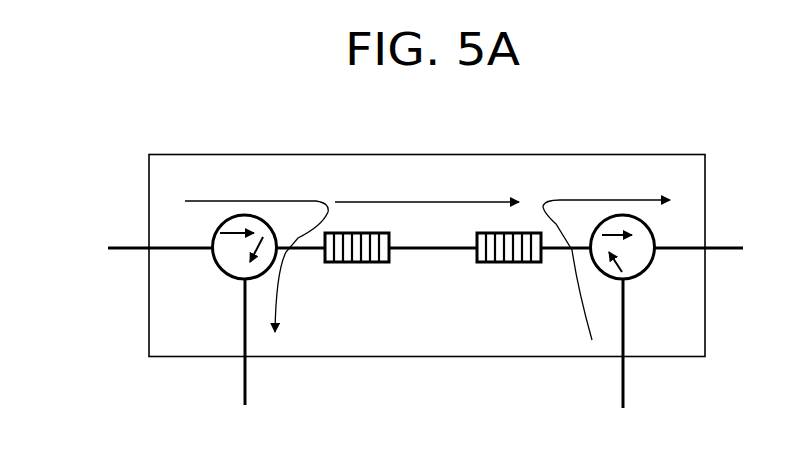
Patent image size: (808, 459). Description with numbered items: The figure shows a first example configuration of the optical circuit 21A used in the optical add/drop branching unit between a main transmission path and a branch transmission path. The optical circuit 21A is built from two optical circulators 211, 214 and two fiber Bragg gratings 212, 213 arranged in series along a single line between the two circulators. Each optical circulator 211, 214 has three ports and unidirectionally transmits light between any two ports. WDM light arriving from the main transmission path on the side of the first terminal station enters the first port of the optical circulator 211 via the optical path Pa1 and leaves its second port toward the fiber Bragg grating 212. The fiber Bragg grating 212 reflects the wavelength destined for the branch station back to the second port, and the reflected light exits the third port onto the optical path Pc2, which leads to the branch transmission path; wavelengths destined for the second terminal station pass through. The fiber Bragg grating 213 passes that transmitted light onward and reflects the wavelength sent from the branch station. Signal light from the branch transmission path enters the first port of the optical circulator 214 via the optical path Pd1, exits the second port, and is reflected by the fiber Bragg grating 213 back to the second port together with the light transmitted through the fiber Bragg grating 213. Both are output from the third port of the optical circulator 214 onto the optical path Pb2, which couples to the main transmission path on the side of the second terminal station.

The optical circuit 21A is at (262, 153).
The optical circulator 211 is at (219, 274).
The fiber Bragg grating 212 is at (360, 263).
The fiber Bragg grating 213 is at (505, 263).
The optical circulator 214 is at (647, 273).
The optical path Pa1 is at (128, 243).
The optical path Pb2 is at (725, 243).
The optical path Pc2 is at (247, 380).
The optical path Pd1 is at (620, 383).